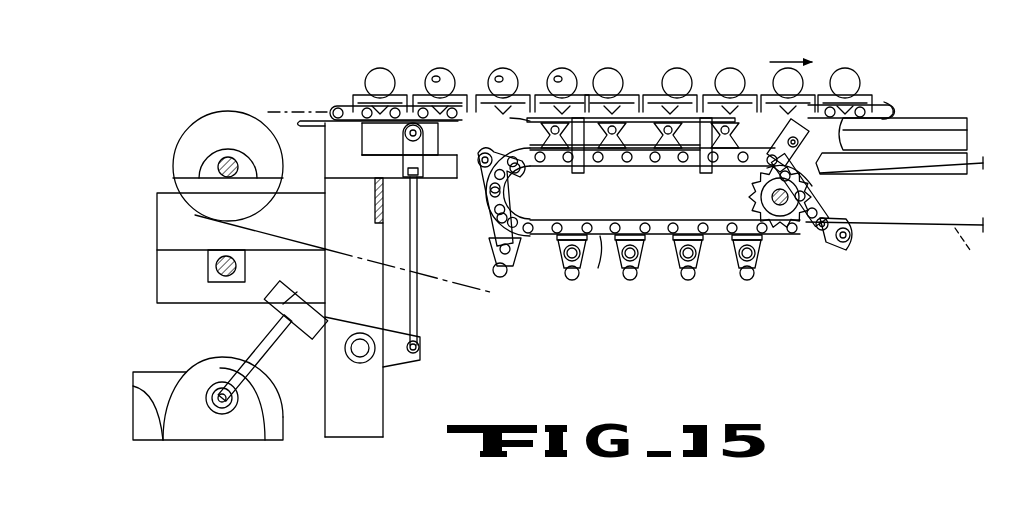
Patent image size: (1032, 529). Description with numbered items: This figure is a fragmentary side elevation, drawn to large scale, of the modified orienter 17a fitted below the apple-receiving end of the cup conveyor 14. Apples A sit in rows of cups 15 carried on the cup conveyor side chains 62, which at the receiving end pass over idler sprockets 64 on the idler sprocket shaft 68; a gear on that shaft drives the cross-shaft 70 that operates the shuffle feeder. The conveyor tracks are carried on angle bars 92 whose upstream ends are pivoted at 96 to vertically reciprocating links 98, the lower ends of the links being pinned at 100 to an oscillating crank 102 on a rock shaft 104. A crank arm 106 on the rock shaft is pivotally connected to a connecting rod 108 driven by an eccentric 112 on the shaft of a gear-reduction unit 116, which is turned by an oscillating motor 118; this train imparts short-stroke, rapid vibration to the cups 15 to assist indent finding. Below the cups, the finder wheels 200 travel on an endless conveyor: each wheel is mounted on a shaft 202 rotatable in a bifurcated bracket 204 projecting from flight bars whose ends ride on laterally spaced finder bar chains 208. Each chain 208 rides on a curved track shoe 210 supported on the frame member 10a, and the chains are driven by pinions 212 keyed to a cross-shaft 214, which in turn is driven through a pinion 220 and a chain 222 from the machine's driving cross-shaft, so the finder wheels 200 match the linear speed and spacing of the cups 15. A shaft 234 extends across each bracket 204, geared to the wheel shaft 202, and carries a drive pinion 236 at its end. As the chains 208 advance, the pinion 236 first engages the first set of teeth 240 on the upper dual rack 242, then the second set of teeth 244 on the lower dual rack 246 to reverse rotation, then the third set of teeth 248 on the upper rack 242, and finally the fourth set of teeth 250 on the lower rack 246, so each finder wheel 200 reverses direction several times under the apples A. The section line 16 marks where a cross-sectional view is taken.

The frame member 10a is at (968, 173).
The cup conveyor 14 is at (335, 100).
The cups 15 is at (417, 95).
The section line 16 is at (560, 80).
The orienter 17a is at (862, 233).
The cup conveyor side chains 62 is at (893, 108).
The idler sprockets 64 is at (268, 112).
The idler sprocket shaft 68 is at (218, 168).
The cross-shaft 70 is at (214, 267).
The angle bars 92 is at (970, 134).
The pivot 96 is at (404, 132).
The vertically reciprocating links 98 is at (420, 312).
The pin 100 is at (420, 348).
The oscillating crank 102 is at (415, 355).
The rock shaft 104 is at (360, 357).
The crank arm 106 is at (300, 285).
The connecting rod 108 is at (270, 342).
The eccentric 112 is at (222, 408).
The gear-reduction unit 116 is at (213, 362).
The oscillating motor 118 is at (141, 390).
The finder wheels 200 is at (658, 185).
The finder wheel shafts 202 is at (493, 260).
The bifurcated brackets 204 is at (496, 233).
The finder bar chains 208 is at (608, 236).
The curved track shoe 210 is at (520, 194).
The pinions 212 is at (812, 205).
The cross-shaft 214 is at (800, 185).
The pinion 220 is at (755, 210).
The chain 222 is at (911, 242).
The shaft 234 is at (485, 188).
The drive pinion 236 is at (478, 163).
The first set of teeth 240 is at (530, 122).
The upper dual rack 242 is at (552, 173).
The second set of teeth 244 is at (612, 138).
The lower dual rack 246 is at (660, 160).
The third set of teeth 248 is at (672, 138).
The fourth set of teeth 250 is at (740, 137).
The apples A is at (498, 75).